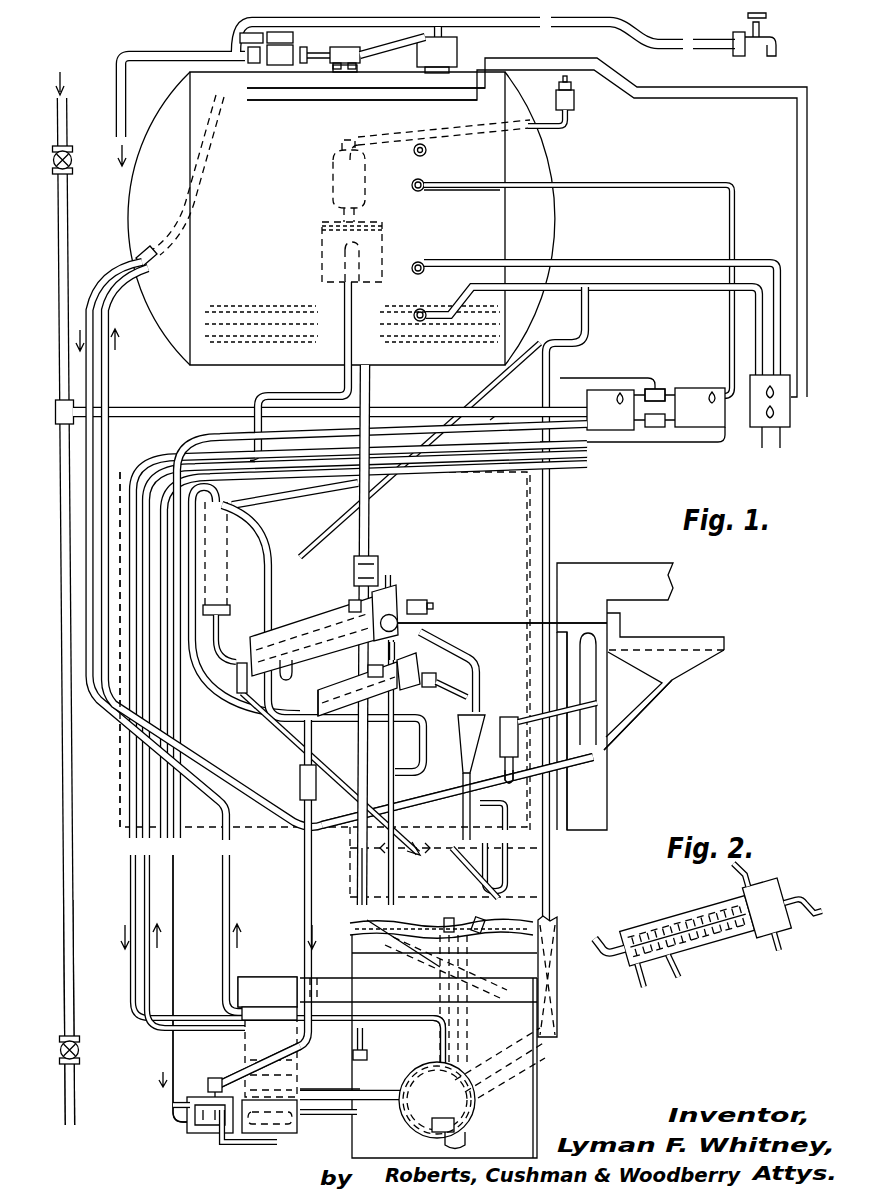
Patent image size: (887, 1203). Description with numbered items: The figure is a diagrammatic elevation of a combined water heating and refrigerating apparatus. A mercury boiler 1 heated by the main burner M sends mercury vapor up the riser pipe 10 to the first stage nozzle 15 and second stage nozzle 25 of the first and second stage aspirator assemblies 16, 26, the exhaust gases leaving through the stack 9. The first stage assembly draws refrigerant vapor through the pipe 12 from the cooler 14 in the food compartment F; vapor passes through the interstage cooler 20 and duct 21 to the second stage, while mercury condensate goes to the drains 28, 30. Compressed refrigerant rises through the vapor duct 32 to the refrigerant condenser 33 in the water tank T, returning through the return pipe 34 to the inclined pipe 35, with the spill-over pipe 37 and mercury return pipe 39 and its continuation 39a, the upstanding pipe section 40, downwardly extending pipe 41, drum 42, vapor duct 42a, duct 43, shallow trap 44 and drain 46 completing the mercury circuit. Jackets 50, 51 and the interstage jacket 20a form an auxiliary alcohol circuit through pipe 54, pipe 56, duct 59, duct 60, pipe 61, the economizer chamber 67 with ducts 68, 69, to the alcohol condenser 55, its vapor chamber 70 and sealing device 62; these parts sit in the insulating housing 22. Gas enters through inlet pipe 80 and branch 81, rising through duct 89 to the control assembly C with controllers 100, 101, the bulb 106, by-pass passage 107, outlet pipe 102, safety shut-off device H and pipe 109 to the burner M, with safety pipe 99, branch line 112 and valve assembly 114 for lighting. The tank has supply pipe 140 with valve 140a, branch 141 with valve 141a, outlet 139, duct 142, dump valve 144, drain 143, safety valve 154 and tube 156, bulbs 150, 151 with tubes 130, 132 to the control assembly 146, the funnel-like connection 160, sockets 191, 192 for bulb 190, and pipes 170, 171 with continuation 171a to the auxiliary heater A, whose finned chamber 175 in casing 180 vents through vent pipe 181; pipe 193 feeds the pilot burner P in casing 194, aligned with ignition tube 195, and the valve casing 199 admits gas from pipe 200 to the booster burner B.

In FIG. 1, the boiler 1 is at (478, 1112).
In FIG. 1, the stack 9 is at (540, 1056).
In FIG. 1, the riser pipe 10 is at (445, 920).
In FIG. 1, the pipe 12 is at (494, 617).
In FIG. 1, the cooler 14 is at (706, 666).
In FIG. 1, the first stage nozzle 15 is at (413, 600).
In FIG. 2, the first stage nozzle 15 is at (795, 908).
In FIG. 1, the first stage aspirator assembly 16 is at (306, 613).
In FIG. 2, the first stage aspirator assembly 16 is at (660, 911).
In FIG. 1, the interstage cooler 20 is at (239, 581).
In FIG. 1, the jacket 20a is at (230, 608).
In FIG. 1, the duct 21 is at (213, 697).
In FIG. 1, the insulating housing 22 is at (116, 768).
In FIG. 1, the second stage nozzle 25 is at (430, 678).
In FIG. 1, the second stage aspirator assembly 26 is at (318, 684).
In FIG. 1, the drain 28 is at (237, 680).
In FIG. 2, the drain 28 is at (617, 980).
In FIG. 1, the drain 30 is at (310, 768).
In FIG. 1, the vapor duct 32 is at (395, 484).
In FIG. 1, the refrigerant condenser 33 is at (278, 353).
In FIG. 1, the return pipe 34 is at (551, 486).
In FIG. 1, the inclined pipe 35 is at (508, 780).
In FIG. 1, the pipe 37 is at (352, 775).
In FIG. 1, the mercury return pipe 39 is at (483, 806).
In FIG. 1, the duct 39a is at (399, 650).
In FIG. 2, the duct 39a is at (772, 958).
In FIG. 1, the upstanding pipe section 40 is at (600, 716).
In FIG. 1, the downwardly extending pipe 41 is at (598, 692).
In FIG. 1, the drum 42 is at (510, 718).
In FIG. 1, the vapor duct 42a is at (530, 716).
In FIG. 1, the duct 43 is at (640, 722).
In FIG. 1, the shallow trap 44 is at (600, 768).
In FIG. 1, the drain 46 is at (458, 752).
In FIG. 1, the jacket 50 is at (348, 608).
In FIG. 2, the jacket 50 is at (682, 922).
In FIG. 1, the jacket 51 is at (334, 694).
In FIG. 1, the pipe 54 is at (373, 395).
In FIG. 2, the pipe 54 is at (754, 884).
In FIG. 1, the alcohol condenser 55 is at (320, 255).
In FIG. 1, the pipe 56 is at (386, 580).
In FIG. 1, the duct 59 is at (296, 498).
In FIG. 1, the duct 60 is at (273, 548).
In FIG. 1, the pipe 61 is at (288, 681).
In FIG. 2, the pipe 61 is at (668, 981).
In FIG. 1, the evacuating and sealing device 62 is at (577, 100).
In FIG. 1, the chamber 67 is at (538, 1076).
In FIG. 1, the duct 68 is at (356, 868).
In FIG. 1, the duct 69 is at (394, 862).
In FIG. 1, the vapor containing chamber 70 is at (330, 178).
In FIG. 1, the inlet pipe 80 is at (367, 1056).
In FIG. 1, the branch 81 is at (410, 1075).
In FIG. 1, the duct 89 is at (130, 883).
In FIG. 1, the safety pipe 99 is at (418, 428).
In FIG. 1, the controller 100 is at (610, 410).
In FIG. 1, the controller 101 is at (700, 407).
In FIG. 1, the outlet pipe 102 is at (128, 803).
In FIG. 1, the thermostatic bulb 106 is at (606, 660).
In FIG. 1, the by-pass passage 107 is at (590, 415).
In FIG. 1, the pipe 109 is at (365, 1101).
In FIG. 1, the branch line 112 is at (430, 1130).
In FIG. 1, the valve assembly 114 is at (453, 1138).
In FIG. 1, the tube 130 is at (625, 262).
In FIG. 1, the tube 132 is at (625, 288).
In FIG. 1, the outlet 139 is at (362, 62).
In FIG. 1, the supply pipe 140 is at (67, 225).
In FIG. 1, the valve 140a is at (71, 150).
In FIG. 1, the branch 141 is at (75, 928).
In FIG. 1, the valve 141a is at (86, 1050).
In FIG. 1, the duct 142 is at (311, 58).
In FIG. 1, the drain 143 is at (120, 88).
In FIG. 1, the dump valve 144 is at (284, 64).
In FIG. 1, the control assembly 146 is at (800, 419).
In FIG. 1, the bulb 150 is at (412, 264).
In FIG. 1, the bulb 151 is at (420, 309).
In FIG. 1, the safety valve 154 is at (469, 46).
In FIG. 1, the tube 156 is at (232, 48).
In FIG. 1, the funnel-like connection 160 is at (335, 392).
In FIG. 1, the pipe 170 is at (302, 874).
In FIG. 1, the return pipe 171 is at (110, 386).
In FIG. 1, the continuation 171a is at (205, 156).
In FIG. 1, the finned water chamber 175 is at (278, 1000).
In FIG. 1, the sheet metal casing 180 is at (245, 1048).
In FIG. 1, the vent pipe 181 is at (340, 984).
In FIG. 1, the bulb 190 is at (451, 207).
In FIG. 1, the socket 191 is at (412, 185).
In FIG. 1, the socket 192 is at (414, 150).
In FIG. 1, the pipe 193 is at (648, 442).
In FIG. 1, the skeletonized casing 194 is at (186, 1104).
In FIG. 1, the ignition tube 195 is at (320, 1118).
In FIG. 1, the casing 199 is at (209, 1082).
In FIG. 1, the pipe 200 is at (263, 1061).
In FIG. 1, the auxiliary water heater A is at (279, 968).
In FIG. 1, the booster burner B is at (291, 1142).
In FIG. 1, the control assembly C is at (675, 375).
In FIG. 1, the food compartment F is at (690, 620).
In FIG. 1, the safety shut-off device H is at (350, 1089).
In FIG. 1, the main burner M is at (408, 1120).
In FIG. 1, the pilot burner P is at (199, 1144).
In FIG. 1, the water tank T is at (567, 165).